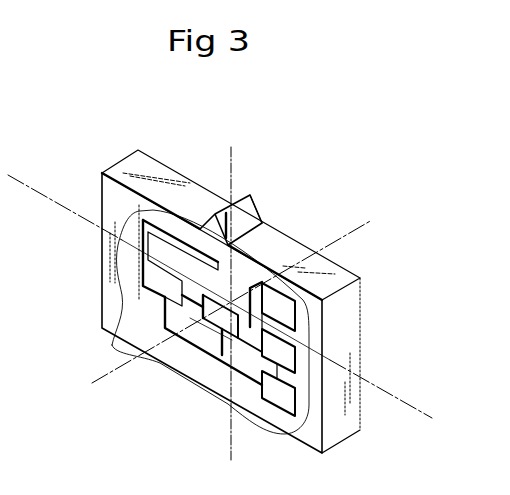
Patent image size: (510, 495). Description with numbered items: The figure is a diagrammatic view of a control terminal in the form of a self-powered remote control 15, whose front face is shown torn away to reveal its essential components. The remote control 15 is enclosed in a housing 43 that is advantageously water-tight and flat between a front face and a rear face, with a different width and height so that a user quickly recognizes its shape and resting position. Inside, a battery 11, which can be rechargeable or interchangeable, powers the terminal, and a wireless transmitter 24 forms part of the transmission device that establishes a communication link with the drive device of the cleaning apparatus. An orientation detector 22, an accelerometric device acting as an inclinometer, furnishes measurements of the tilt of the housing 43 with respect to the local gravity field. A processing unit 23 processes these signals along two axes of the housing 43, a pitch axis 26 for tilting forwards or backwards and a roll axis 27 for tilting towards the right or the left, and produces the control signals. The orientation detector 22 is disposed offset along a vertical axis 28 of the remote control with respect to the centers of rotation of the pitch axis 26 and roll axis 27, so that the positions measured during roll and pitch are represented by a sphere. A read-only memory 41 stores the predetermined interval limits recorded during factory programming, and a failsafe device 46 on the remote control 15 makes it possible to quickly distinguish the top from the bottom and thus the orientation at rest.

The remote control 15 is at (78, 203).
The vertical axis 28 is at (232, 166).
The failsafe device 46 is at (225, 227).
The housing 43 is at (277, 244).
The roll axis 27 is at (337, 241).
The pitch axis 26 is at (384, 386).
The wireless transmitter 24 is at (141, 288).
The processing unit 23 is at (163, 363).
The read-only memory 41 is at (225, 360).
The orientation detector 22 is at (240, 398).
The battery 11 is at (254, 424).